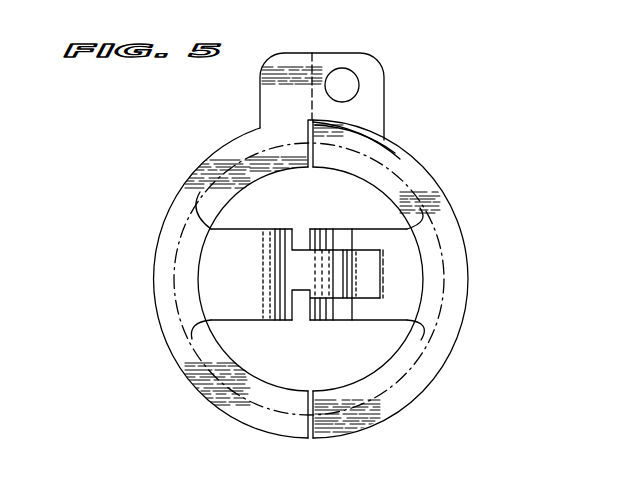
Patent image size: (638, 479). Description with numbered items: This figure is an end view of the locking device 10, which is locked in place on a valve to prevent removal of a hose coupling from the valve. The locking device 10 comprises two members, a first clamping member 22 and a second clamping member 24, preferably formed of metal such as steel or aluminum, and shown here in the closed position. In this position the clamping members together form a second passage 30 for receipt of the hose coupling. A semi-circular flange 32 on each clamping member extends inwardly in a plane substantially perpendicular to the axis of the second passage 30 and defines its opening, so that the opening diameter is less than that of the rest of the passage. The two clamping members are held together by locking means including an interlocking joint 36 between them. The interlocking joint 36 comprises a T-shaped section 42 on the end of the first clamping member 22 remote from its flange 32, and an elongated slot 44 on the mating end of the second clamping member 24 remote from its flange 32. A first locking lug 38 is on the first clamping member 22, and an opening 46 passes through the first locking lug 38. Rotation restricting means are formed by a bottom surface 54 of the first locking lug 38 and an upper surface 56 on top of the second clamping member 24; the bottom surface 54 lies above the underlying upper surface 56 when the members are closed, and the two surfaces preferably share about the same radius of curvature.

The locking device 10 is at (148, 264).
The first clamping member 22 is at (156, 329).
The second clamping member 24 is at (470, 311).
The second passage 30 is at (268, 362).
The semi-circular flange 32 is at (187, 352).
The interlocking joint 36 is at (327, 226).
The first locking lug 38 is at (340, 53).
The T-shaped section 42 is at (356, 268).
The elongated slot 44 is at (367, 289).
The opening 46 is at (352, 89).
The bottom surface 54 is at (355, 119).
The upper surface 56 is at (331, 138).